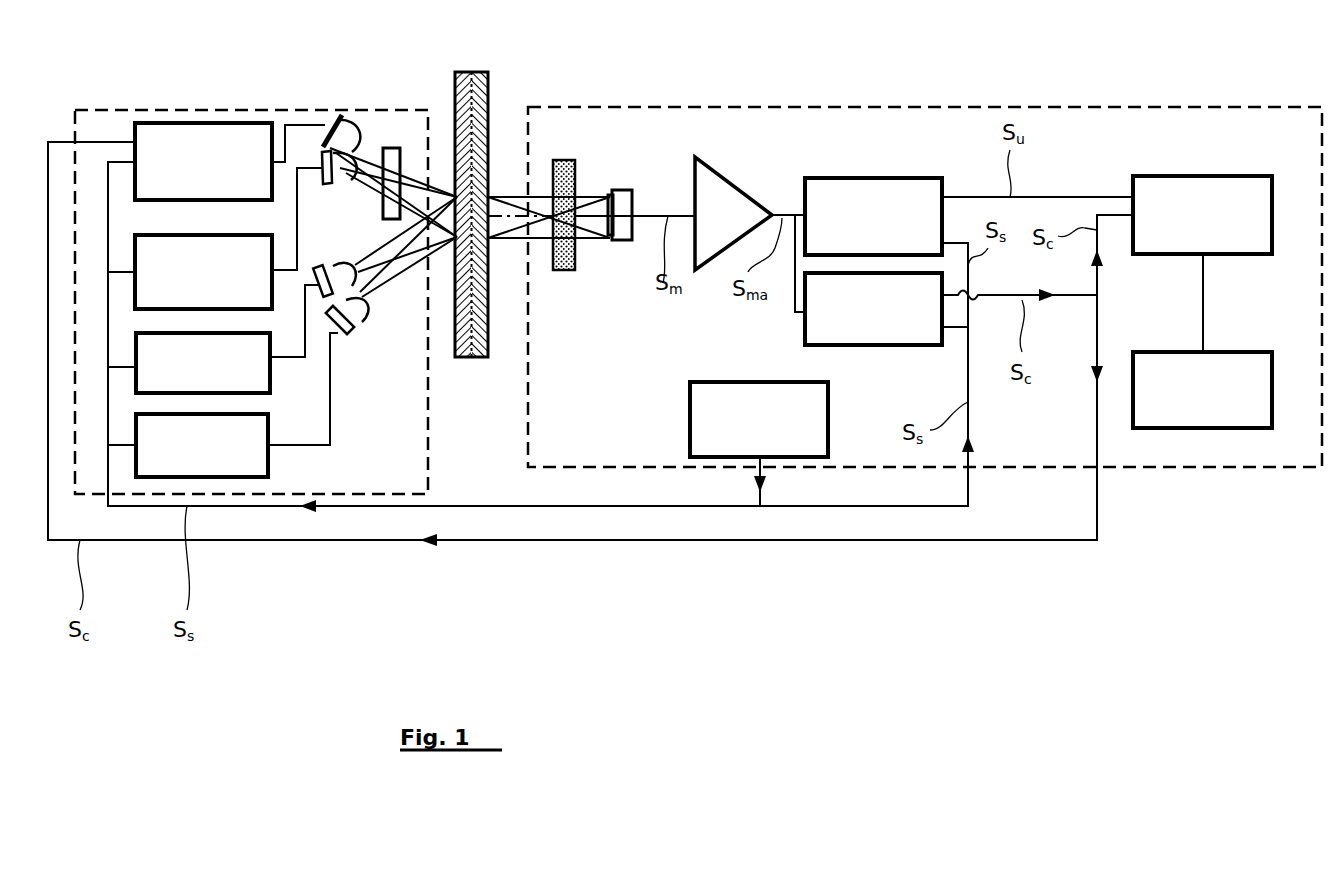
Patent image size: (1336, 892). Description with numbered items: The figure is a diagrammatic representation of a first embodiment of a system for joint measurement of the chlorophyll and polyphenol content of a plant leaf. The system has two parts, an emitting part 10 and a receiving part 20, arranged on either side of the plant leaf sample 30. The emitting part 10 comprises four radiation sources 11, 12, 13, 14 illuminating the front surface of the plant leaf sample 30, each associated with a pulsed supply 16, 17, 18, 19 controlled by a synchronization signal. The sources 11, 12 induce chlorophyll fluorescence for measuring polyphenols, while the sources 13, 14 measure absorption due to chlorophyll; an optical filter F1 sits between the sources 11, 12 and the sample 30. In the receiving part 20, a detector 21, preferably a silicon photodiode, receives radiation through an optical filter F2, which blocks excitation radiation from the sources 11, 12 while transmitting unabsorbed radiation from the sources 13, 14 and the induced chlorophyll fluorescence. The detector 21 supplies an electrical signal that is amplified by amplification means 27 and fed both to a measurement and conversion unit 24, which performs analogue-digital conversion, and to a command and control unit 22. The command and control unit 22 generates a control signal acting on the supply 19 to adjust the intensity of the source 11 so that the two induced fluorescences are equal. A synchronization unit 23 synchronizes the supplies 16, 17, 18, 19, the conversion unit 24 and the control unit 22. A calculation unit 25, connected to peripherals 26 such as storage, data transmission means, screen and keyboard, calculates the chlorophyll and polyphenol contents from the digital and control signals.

The emitting part 10 is at (107, 110).
The radiation source 11 is at (340, 115).
The radiation source 12 is at (323, 150).
The radiation source 13 is at (323, 266).
The radiation source 14 is at (352, 325).
The pulsed supply 16 is at (268, 427).
The pulsed supply 17 is at (272, 366).
The pulsed supply 18 is at (218, 235).
The pulsed supply 19 is at (200, 123).
The receiving part 20 is at (645, 107).
The detector 21 is at (625, 240).
The command and control unit 22 is at (858, 345).
The synchronization unit 23 is at (690, 390).
The measurement and conversion unit 24 is at (858, 178).
The calculation unit 25 is at (1160, 176).
The peripherals 26 is at (1253, 352).
The amplification means 27 is at (730, 178).
The plant leaf sample 30 is at (483, 72).
The optical filter F1 is at (390, 148).
The optical filter F2 is at (560, 270).